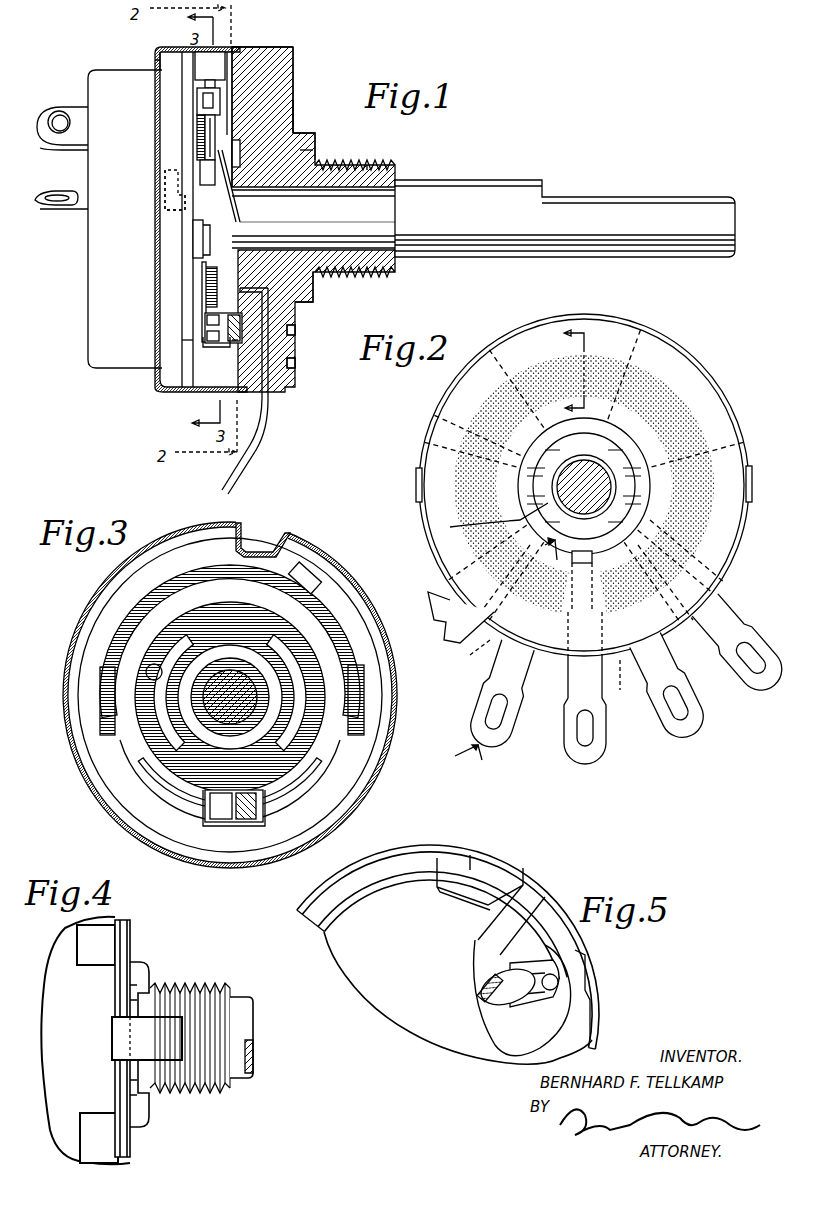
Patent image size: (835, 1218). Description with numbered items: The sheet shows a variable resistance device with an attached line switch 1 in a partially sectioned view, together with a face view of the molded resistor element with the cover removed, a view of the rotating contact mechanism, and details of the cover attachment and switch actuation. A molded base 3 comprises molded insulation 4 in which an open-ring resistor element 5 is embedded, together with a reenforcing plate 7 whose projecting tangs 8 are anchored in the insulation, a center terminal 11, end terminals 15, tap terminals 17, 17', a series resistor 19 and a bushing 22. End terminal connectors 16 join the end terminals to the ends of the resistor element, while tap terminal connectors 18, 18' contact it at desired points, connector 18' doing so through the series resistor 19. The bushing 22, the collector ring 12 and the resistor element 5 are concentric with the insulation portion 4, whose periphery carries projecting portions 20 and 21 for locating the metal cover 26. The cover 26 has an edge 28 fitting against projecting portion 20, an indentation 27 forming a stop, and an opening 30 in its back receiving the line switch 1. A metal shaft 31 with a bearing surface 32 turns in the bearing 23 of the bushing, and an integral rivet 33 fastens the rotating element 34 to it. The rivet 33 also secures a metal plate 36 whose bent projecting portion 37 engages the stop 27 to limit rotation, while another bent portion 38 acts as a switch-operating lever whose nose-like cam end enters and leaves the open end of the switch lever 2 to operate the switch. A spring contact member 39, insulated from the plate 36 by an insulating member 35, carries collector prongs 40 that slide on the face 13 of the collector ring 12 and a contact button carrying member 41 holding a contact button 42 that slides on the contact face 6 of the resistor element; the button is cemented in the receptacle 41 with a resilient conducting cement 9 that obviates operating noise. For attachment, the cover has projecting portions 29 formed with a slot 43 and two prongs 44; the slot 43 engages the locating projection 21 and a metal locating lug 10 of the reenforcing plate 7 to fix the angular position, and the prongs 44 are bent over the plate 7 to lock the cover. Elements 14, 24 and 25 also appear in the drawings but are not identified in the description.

In FIG. 1, the line switch 1 is at (105, 68).
In FIG. 5, the switch lever 2 is at (530, 1007).
In FIG. 1, the molded base 3 is at (275, 47).
In FIG. 2, the molded base 3 is at (668, 345).
In FIG. 4, the molded base 3 is at (102, 940).
In FIG. 1, the molded insulation 4 is at (273, 90).
In FIG. 2, the molded insulation 4 is at (686, 372).
In FIG. 1, the resistor element 5 is at (294, 105).
In FIG. 2, the resistor element 5 is at (620, 362).
In FIG. 1, the resistor element contact face 6 is at (235, 340).
In FIG. 2, the resistor element contact face 6 is at (538, 375).
In FIG. 1, the reenforcing plate 7 is at (297, 63).
In FIG. 4, the reenforcing plate 7 is at (133, 1153).
In FIG. 1, the projecting tangs 8 is at (292, 330).
In FIG. 1, the resilient conducting cement 9 is at (182, 345).
In FIG. 2, the resilient conducting cement 9 is at (500, 652).
In FIG. 2, the metal locating lug 10 is at (586, 374).
In FIG. 4, the metal locating lug 10 is at (168, 1035).
In FIG. 1, the center terminal 11 is at (268, 420).
In FIG. 2, the center terminal 11 is at (590, 772).
In FIG. 1, the collector ring 12 is at (318, 290).
In FIG. 2, the collector ring 12 is at (648, 498).
In FIG. 1, the face of collector ring 13 is at (300, 150).
In FIG. 2, the face of collector ring 13 is at (450, 527).
In FIG. 1, the terminal connector 14 is at (295, 355).
In FIG. 2, the terminal connector 14 is at (596, 560).
In FIG. 2, the end terminals 15 is at (497, 748).
In FIG. 2, the end terminal connectors 16 is at (621, 678).
In FIG. 2, the tap terminal 17 is at (714, 609).
In FIG. 2, the tap terminal 17' is at (465, 584).
In FIG. 2, the tap terminal connector 18 is at (710, 431).
In FIG. 2, the tap terminal connector 18' is at (454, 447).
In FIG. 2, the series resistor 19 is at (436, 435).
In FIG. 1, the projecting portion 20 is at (272, 47).
In FIG. 2, the projecting portion 20 is at (576, 314).
In FIG. 2, the locating projection 21 is at (416, 485).
In FIG. 4, the locating projection 21 is at (120, 1040).
In FIG. 1, the bushing 22 is at (340, 165).
In FIG. 2, the bushing 22 is at (617, 478).
In FIG. 4, the bushing 22 is at (220, 985).
In FIG. 1, the bearing 23 is at (367, 165).
In FIG. 1, the threads 24 is at (360, 280).
In FIG. 4, the threads 24 is at (200, 1095).
In FIG. 1, the bushing flange 25 is at (312, 155).
In FIG. 1, the metal cover 26 is at (178, 48).
In FIG. 3, the metal cover 26 is at (230, 693).
In FIG. 4, the metal cover 26 is at (42, 967).
In FIG. 5, the metal cover 26 is at (498, 866).
In FIG. 1, the indentation 27 is at (210, 64).
In FIG. 3, the indentation 27 is at (258, 548).
In FIG. 1, the edge 28 is at (234, 50).
In FIG. 4, the projecting portions 29 is at (100, 982).
In FIG. 1, the opening 30 is at (158, 70).
In FIG. 1, the metal shaft 31 is at (503, 178).
In FIG. 4, the metal shaft 31 is at (248, 1078).
In FIG. 1, the bearing surface 32 is at (375, 202).
In FIG. 1, the integral rivet 33 is at (202, 243).
In FIG. 1, the rotating element 34 is at (194, 135).
In FIG. 3, the rotating element 34 is at (113, 622).
In FIG. 1, the insulating member 35 is at (207, 143).
In FIG. 3, the insulating member 35 is at (300, 757).
In FIG. 1, the metal plate 36 is at (205, 160).
In FIG. 1, the bent projecting portion 37 is at (197, 100).
In FIG. 3, the bent projecting portion 37 is at (318, 575).
In FIG. 1, the switch-operating lever 38 is at (198, 186).
In FIG. 5, the switch-operating lever 38 is at (500, 975).
In FIG. 1, the spring contact member 39 is at (200, 310).
In FIG. 3, the spring contact member 39 is at (128, 768).
In FIG. 1, the collector prongs 40 is at (236, 222).
In FIG. 3, the collector prongs 40 is at (300, 735).
In FIG. 1, the contact button carrying member 41 is at (208, 347).
In FIG. 3, the contact button carrying member 41 is at (210, 826).
In FIG. 1, the contact button 42 is at (213, 328).
In FIG. 3, the contact button 42 is at (240, 822).
In FIG. 4, the slot 43 is at (115, 1020).
In FIG. 4, the prongs 44 is at (140, 995).